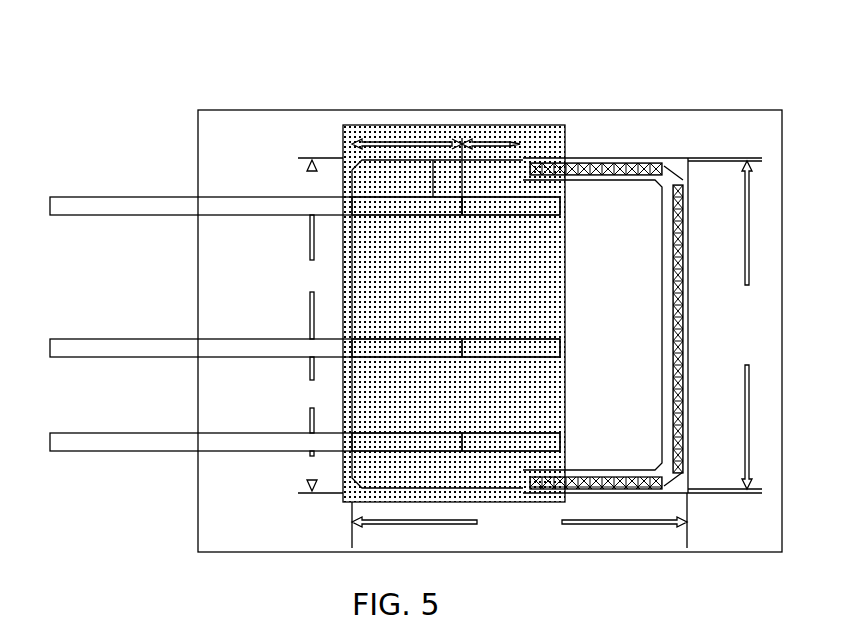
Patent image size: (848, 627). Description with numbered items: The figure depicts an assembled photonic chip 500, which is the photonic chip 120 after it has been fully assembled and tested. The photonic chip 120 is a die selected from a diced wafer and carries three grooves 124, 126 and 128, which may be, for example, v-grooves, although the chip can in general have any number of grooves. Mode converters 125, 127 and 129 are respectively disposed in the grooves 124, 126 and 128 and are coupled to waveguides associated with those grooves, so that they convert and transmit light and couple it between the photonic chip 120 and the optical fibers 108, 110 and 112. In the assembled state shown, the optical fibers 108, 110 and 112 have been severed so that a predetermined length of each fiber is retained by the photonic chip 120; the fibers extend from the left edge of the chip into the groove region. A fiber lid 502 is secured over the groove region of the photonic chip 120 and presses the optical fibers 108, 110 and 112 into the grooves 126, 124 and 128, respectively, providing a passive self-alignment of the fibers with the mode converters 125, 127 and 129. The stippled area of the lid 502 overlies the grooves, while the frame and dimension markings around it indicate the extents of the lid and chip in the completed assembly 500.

The assembled photonic chip 500 is at (688, 62).
The photonic chip 120 is at (330, 110).
The fiber lid 502 is at (508, 125).
The optical fiber 110 is at (92, 197).
The optical fiber 108 is at (92, 339).
The optical fiber 112 is at (92, 433).
The groove 124 is at (422, 217).
The mode converter 125 is at (522, 217).
The groove 126 is at (424, 338).
The mode converter 127 is at (524, 338).
The groove 128 is at (424, 432).
The mode converter 129 is at (522, 432).